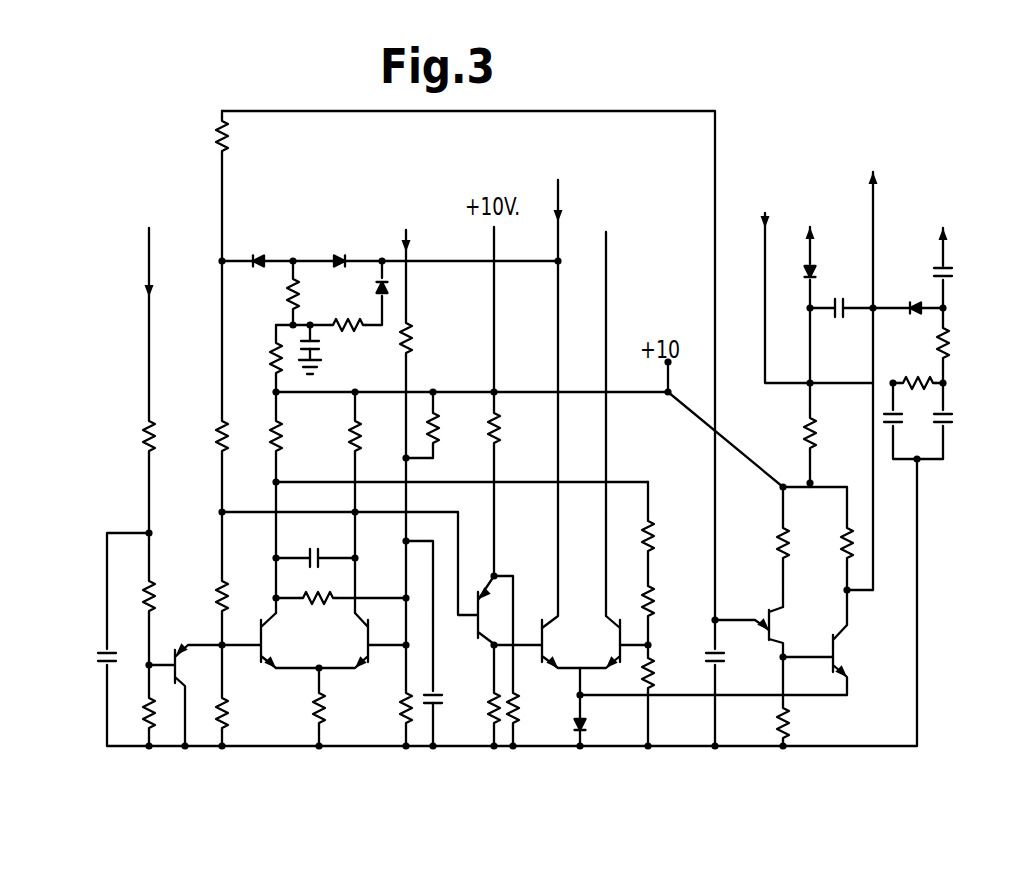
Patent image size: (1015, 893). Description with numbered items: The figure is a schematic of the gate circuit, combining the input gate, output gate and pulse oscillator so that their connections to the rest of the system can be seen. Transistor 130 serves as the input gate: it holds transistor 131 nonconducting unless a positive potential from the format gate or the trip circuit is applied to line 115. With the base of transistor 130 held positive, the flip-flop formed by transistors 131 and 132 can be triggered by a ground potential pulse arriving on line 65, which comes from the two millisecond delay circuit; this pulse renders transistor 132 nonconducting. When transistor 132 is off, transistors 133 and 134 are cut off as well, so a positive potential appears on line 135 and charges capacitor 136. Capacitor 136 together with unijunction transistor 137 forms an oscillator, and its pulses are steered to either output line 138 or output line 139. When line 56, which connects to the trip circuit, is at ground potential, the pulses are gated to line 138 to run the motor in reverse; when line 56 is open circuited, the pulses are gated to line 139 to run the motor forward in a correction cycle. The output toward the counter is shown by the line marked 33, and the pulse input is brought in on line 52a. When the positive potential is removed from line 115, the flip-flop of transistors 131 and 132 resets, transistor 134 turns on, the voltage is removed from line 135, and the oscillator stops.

The line 115 is at (149, 237).
The line 135 is at (222, 292).
The line 65 is at (408, 246).
The pulse input line 52a is at (559, 197).
The line 56 is at (765, 273).
The output line 138 is at (810, 254).
The output line 139 is at (943, 266).
The counter 33 is at (879, 358).
The transistor 130 is at (195, 637).
The transistor 131 is at (270, 641).
The transistor 132 is at (368, 647).
The transistor 133 is at (490, 616).
The transistor 134 is at (581, 643).
The capacitor 136 is at (710, 658).
The unijunction transistor 137 is at (783, 620).